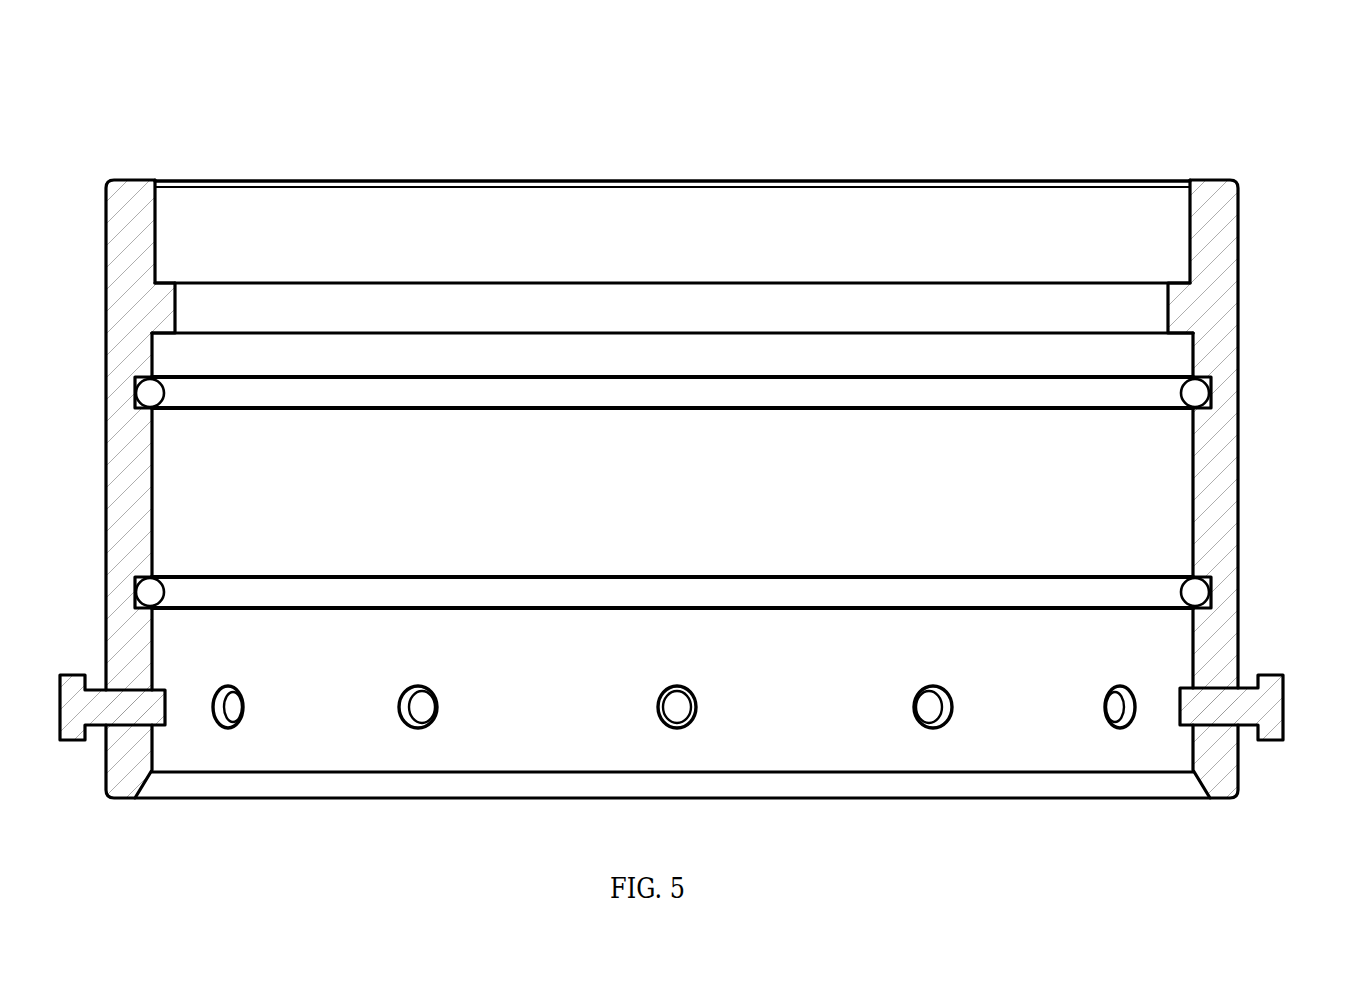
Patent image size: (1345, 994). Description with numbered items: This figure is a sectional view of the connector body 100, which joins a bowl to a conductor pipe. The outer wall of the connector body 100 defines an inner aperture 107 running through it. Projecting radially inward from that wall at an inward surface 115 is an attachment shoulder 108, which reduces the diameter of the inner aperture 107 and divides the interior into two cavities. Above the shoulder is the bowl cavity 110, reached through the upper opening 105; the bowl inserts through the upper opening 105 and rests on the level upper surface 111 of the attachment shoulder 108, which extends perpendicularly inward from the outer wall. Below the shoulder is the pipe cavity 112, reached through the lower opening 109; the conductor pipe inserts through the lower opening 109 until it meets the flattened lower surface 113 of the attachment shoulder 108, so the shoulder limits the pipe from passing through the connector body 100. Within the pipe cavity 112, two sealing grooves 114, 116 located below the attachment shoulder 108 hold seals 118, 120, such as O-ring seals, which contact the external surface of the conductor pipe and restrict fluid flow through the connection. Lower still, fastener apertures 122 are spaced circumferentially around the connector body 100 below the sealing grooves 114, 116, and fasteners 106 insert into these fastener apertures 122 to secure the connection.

The connector body 100 is at (1218, 190).
The upper opening 105 is at (816, 198).
The fasteners 106 is at (1208, 710).
The inner aperture 107 is at (513, 690).
The attachment shoulder 108 is at (165, 291).
The lower opening 109 is at (362, 785).
The bowl cavity 110 is at (483, 228).
The upper surface 111 is at (1176, 282).
The pipe cavity 112 is at (295, 703).
The lower surface 113 is at (1179, 333).
The sealing groove 114 is at (1132, 393).
The inward surface 115 is at (180, 313).
The sealing groove 116 is at (1138, 585).
The seal 118 is at (1207, 403).
The seal 120 is at (1205, 590).
The fastener apertures 122 is at (925, 725).